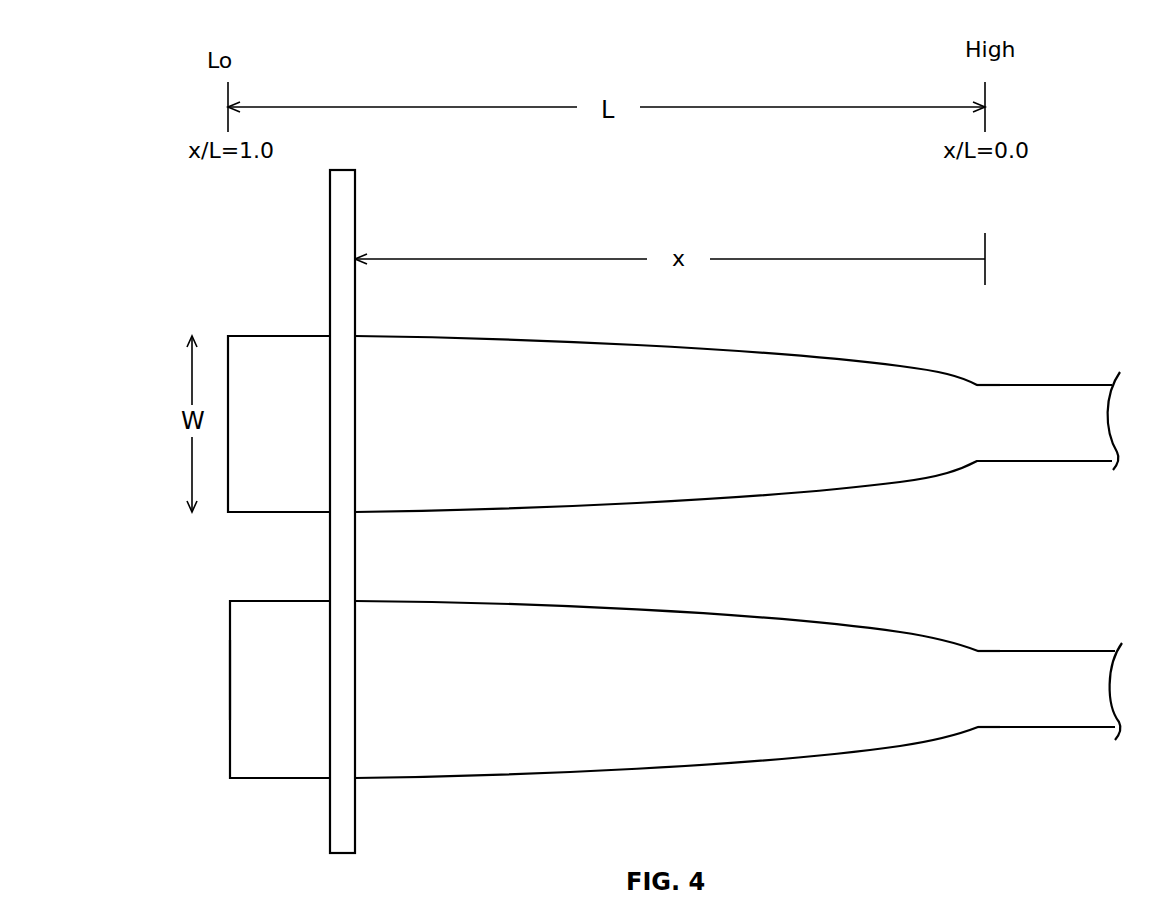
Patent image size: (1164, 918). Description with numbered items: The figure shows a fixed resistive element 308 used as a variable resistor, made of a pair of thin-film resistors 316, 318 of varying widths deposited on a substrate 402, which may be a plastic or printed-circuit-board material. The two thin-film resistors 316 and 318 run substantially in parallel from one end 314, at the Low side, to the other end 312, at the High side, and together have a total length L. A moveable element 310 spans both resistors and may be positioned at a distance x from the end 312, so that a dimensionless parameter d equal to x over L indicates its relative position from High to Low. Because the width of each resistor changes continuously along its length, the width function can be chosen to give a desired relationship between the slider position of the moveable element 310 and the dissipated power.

The fixed resistive element 308 is at (651, 511).
The moveable element 310 is at (345, 226).
The end 312 is at (982, 690).
The end 314 is at (228, 677).
The thin-film resistor 316 is at (665, 424).
The thin-film resistor 318 is at (675, 705).
The substrate 402 is at (667, 570).